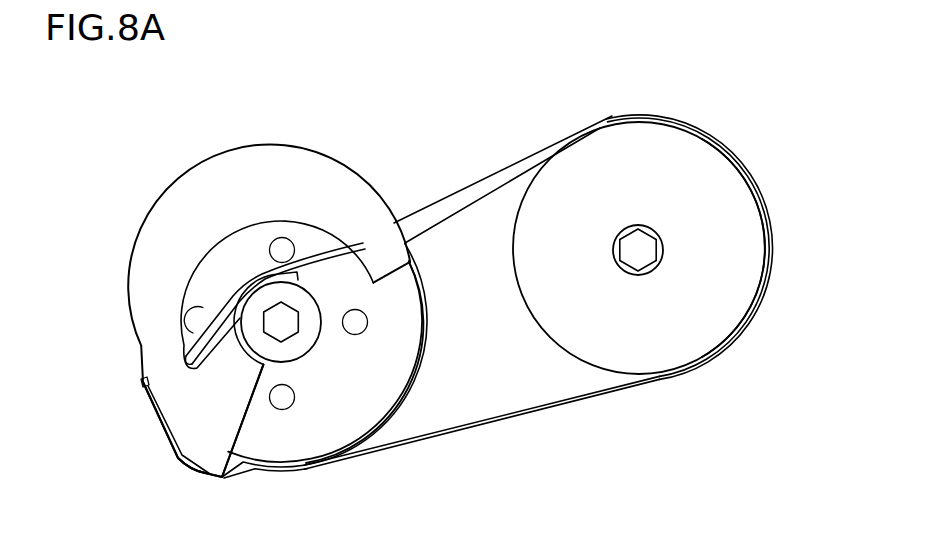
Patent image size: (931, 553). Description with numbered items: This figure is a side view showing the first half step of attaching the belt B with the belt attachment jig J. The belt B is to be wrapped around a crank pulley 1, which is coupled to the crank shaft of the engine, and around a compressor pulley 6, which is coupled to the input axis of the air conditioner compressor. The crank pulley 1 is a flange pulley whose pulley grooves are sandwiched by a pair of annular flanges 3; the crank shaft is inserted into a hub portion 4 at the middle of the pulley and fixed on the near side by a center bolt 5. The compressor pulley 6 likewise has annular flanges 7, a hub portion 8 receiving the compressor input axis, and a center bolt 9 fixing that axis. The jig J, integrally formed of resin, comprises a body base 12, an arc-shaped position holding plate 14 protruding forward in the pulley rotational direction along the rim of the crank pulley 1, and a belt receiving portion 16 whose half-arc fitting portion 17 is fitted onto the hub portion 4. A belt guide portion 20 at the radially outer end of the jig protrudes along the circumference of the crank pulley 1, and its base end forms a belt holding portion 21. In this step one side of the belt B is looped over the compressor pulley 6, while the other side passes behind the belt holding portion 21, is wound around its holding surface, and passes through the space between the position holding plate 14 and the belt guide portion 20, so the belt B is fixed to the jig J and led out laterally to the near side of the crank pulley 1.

The crank pulley 1 is at (323, 440).
The annular flange 3 is at (425, 347).
The hub portion 4 is at (300, 345).
The center bolt 5 is at (285, 310).
The compressor pulley 6 is at (644, 143).
The annular flange 7 is at (742, 165).
The hub portion 8 is at (666, 250).
The center bolt 9 is at (645, 242).
The body base 12 is at (222, 424).
The position holding plate 14 is at (207, 208).
The belt receiving portion 16 is at (278, 277).
The fitting portion 17 is at (275, 306).
The belt guide portion 20 is at (143, 383).
The belt holding portion 21 is at (183, 462).
The belt B is at (456, 197).
The belt attachment jig J is at (145, 278).